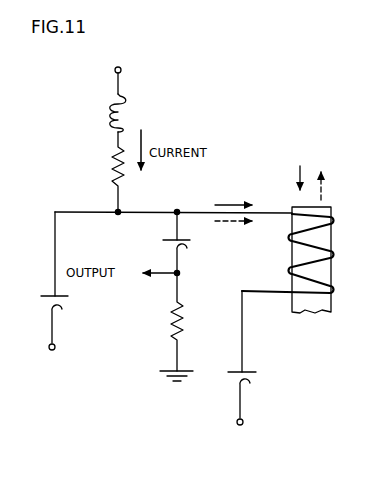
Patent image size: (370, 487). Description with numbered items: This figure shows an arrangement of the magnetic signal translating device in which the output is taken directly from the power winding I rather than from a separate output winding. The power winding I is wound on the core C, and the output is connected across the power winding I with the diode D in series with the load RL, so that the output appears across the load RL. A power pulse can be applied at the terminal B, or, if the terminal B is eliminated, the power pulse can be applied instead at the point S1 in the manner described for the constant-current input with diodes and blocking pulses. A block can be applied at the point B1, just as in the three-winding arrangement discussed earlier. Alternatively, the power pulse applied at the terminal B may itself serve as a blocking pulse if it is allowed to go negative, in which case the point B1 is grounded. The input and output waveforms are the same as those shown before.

The point S1 is at (118, 129).
The terminal B is at (54, 292).
The diode D is at (184, 242).
The load RL is at (181, 327).
The magnetic core C is at (317, 312).
The power winding I is at (296, 253).
The point B1 is at (242, 370).